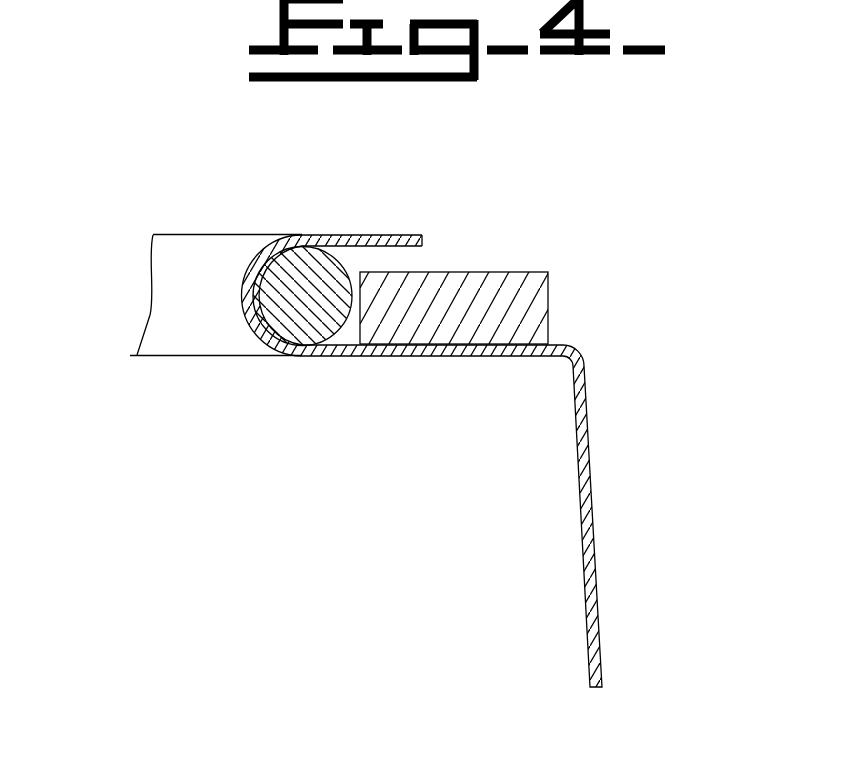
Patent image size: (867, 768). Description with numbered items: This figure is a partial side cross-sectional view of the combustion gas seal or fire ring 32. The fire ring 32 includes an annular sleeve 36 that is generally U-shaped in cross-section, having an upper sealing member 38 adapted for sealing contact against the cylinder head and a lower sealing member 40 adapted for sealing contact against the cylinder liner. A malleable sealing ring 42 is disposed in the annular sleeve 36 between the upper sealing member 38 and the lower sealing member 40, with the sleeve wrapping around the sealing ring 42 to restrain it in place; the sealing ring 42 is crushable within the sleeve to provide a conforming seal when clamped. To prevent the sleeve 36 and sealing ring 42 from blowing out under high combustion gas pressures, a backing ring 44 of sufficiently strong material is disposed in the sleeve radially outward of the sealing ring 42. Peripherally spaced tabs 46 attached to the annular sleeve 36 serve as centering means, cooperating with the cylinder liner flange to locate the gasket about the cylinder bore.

The combustion gas seal or fire ring 32 is at (166, 213).
The annular sleeve 36 is at (250, 323).
The upper sealing member 38 is at (407, 235).
The lower sealing member 40 is at (462, 355).
The malleable sealing ring 42 is at (340, 330).
The backing ring 44 is at (548, 290).
The tabs 46 is at (592, 515).